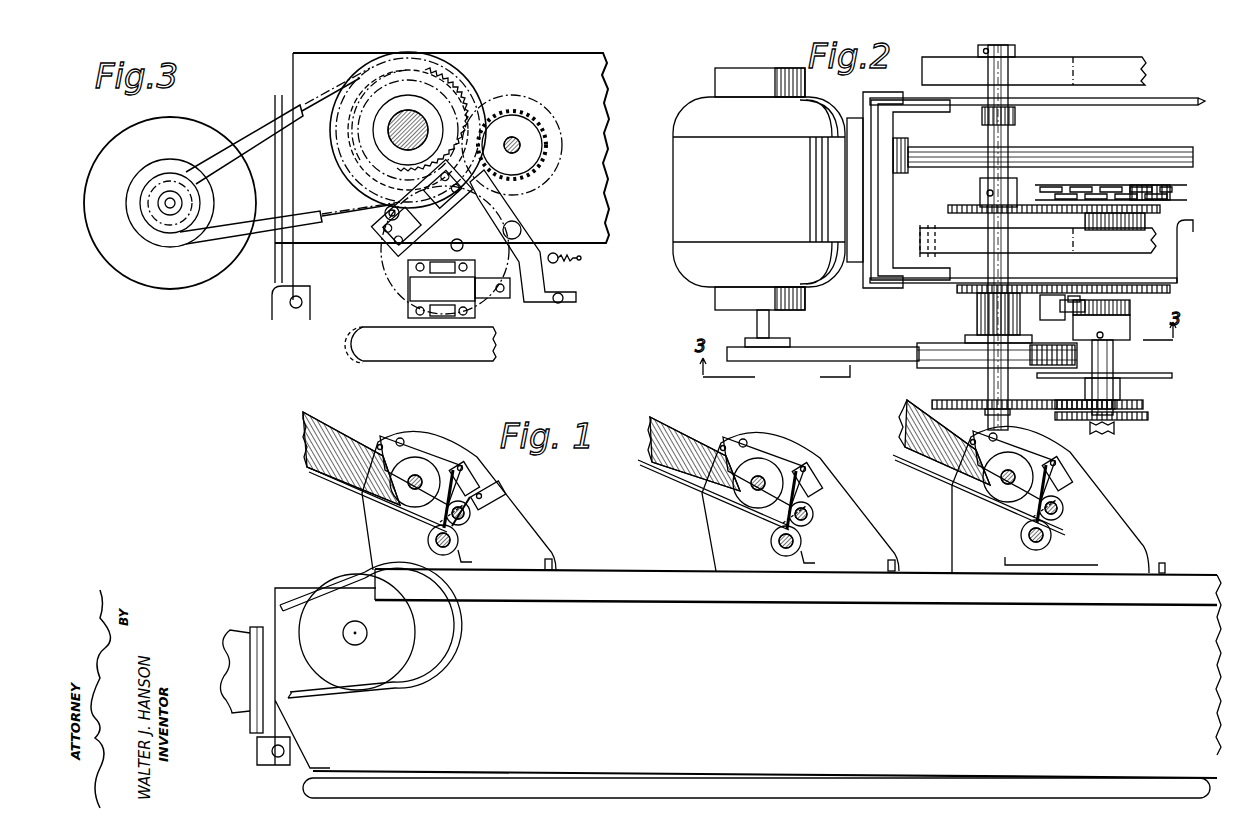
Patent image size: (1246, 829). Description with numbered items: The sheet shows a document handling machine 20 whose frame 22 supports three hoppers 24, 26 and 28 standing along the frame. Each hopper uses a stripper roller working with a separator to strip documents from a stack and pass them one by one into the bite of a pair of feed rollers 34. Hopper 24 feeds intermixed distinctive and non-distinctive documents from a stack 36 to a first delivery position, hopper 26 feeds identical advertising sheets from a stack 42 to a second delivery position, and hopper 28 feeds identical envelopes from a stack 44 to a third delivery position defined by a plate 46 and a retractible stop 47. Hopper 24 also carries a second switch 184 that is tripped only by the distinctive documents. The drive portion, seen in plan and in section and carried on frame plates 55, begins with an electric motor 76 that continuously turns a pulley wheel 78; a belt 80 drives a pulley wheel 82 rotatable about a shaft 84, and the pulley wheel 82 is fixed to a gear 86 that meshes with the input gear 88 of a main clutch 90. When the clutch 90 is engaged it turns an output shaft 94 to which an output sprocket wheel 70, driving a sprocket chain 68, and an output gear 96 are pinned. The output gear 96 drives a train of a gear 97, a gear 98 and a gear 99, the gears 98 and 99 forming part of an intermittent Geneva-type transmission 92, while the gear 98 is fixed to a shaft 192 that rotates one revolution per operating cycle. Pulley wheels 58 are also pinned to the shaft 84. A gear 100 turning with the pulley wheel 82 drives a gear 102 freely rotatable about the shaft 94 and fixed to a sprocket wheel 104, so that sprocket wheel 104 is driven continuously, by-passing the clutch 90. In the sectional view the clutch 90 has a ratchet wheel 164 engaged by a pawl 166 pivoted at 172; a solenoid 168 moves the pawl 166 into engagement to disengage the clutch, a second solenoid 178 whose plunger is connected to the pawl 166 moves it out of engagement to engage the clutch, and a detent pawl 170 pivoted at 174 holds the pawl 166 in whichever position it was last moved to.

In FIG. 1, the document handling machine 20 is at (296, 535).
In FIG. 1, the frame 22 is at (630, 568).
In FIG. 1, the hopper 24 is at (421, 423).
In FIG. 1, the hopper 26 is at (800, 476).
In FIG. 1, the hopper 28 is at (1053, 499).
In FIG. 1, the feed rollers 34 is at (470, 517).
In FIG. 1, the stack 36 is at (336, 428).
In FIG. 1, the stack 42 is at (713, 462).
In FIG. 1, the stack 44 is at (965, 462).
In FIG. 1, the plate 46 is at (1057, 548).
In FIG. 1, the retractible stop 47 is at (1149, 552).
In FIG. 2, the frame plate 55 is at (1100, 62).
In FIG. 2, the pulley wheels 58 is at (1040, 65).
In FIG. 2, the sprocket chain 68 is at (1185, 200).
In FIG. 2, the output sprocket wheel 70 is at (1183, 190).
In FIG. 3, the electric motor 76 is at (128, 258).
In FIG. 2, the electric motor 76 is at (692, 206).
In FIG. 3, the pulley wheel 78 is at (193, 197).
In FIG. 2, the pulley wheel 78 is at (745, 342).
In FIG. 3, the belt 80 is at (222, 232).
In FIG. 2, the belt 80 is at (806, 347).
In FIG. 1, the belt 80 is at (328, 696).
In FIG. 3, the pulley wheel 82 is at (345, 168).
In FIG. 2, the pulley wheel 82 is at (940, 345).
In FIG. 1, the pulley wheel 82 is at (386, 672).
In FIG. 3, the shaft 84 is at (388, 128).
In FIG. 2, the shaft 84 is at (1008, 138).
In FIG. 1, the shaft 84 is at (364, 643).
In FIG. 2, the gear 86 is at (968, 294).
In FIG. 2, the input gear 88 is at (1070, 296).
In FIG. 3, the main clutch 90 is at (565, 113).
In FIG. 2, the main clutch 90 is at (1139, 321).
In FIG. 2, the intermittent gear transmission 92 is at (1027, 190).
In FIG. 3, the output shaft 94 is at (512, 136).
In FIG. 2, the output shaft 94 is at (1110, 362).
In FIG. 2, the output gear 96 is at (1092, 230).
In FIG. 2, the gear 97 is at (1188, 216).
In FIG. 3, the gear 98 is at (375, 264).
In FIG. 2, the gear 98 is at (1023, 280).
In FIG. 2, the gear 99 is at (948, 207).
In FIG. 2, the gear 100 is at (950, 400).
In FIG. 2, the gear 102 is at (1145, 403).
In FIG. 2, the sprocket wheel 104 is at (1148, 416).
In FIG. 3, the ratchet wheel 164 is at (548, 162).
In FIG. 3, the pawl 166 is at (532, 250).
In FIG. 3, the solenoid 168 is at (410, 290).
In FIG. 3, the detent pawl 170 is at (560, 263).
In FIG. 3, the pivot 172 is at (521, 228).
In FIG. 3, the pivot 174 is at (578, 296).
In FIG. 3, the second solenoid 178 is at (405, 222).
In FIG. 1, the second switch 184 is at (495, 494).
In FIG. 3, the shaft 192 is at (474, 246).